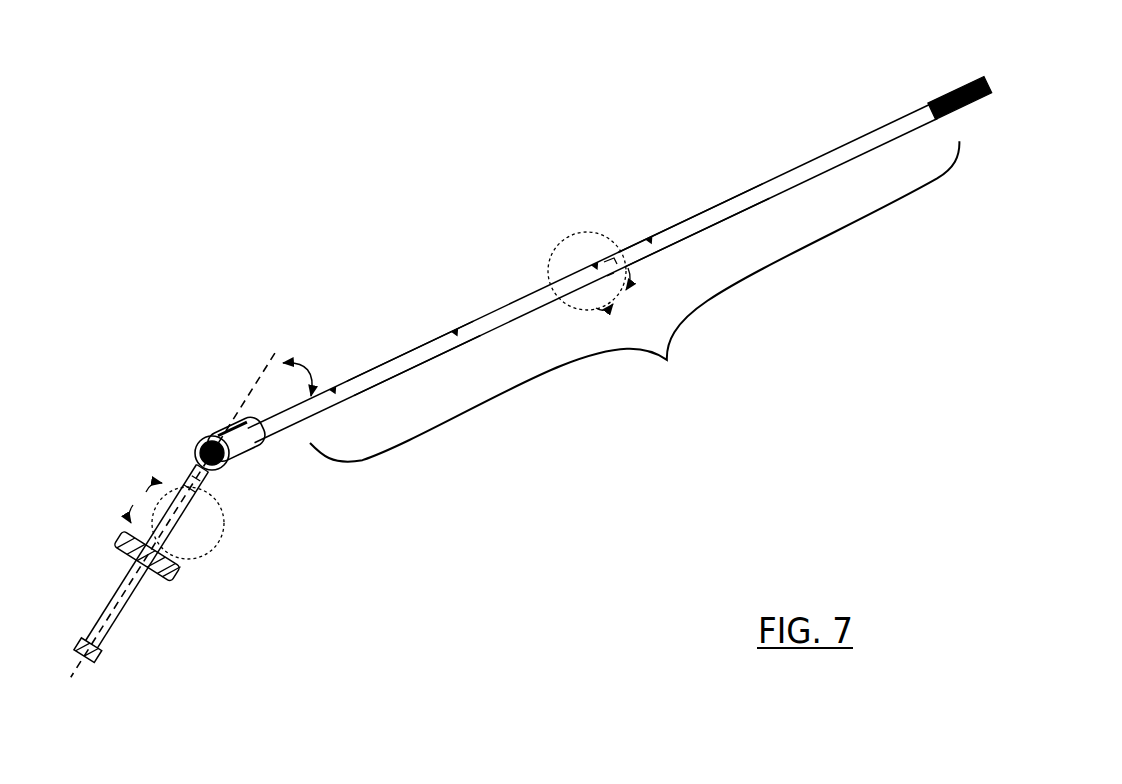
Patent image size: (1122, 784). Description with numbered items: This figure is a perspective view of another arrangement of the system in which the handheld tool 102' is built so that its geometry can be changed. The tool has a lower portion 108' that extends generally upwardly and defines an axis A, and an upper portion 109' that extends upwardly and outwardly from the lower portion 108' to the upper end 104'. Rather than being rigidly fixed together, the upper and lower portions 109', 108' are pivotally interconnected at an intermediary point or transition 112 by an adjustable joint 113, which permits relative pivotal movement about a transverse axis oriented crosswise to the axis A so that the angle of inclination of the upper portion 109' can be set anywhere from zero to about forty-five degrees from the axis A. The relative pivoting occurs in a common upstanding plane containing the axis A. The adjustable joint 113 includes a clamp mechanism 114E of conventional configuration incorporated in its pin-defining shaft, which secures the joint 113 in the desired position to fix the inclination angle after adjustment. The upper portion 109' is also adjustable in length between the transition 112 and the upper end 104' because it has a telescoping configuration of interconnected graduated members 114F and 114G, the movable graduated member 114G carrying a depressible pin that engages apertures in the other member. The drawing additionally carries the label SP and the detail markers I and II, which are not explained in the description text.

The handheld tool 102' is at (600, 271).
The upper end 104' is at (936, 74).
The lower portion 108' is at (190, 575).
The upper portion 109' is at (650, 325).
The transition 112 is at (227, 474).
The adjustable joint 113 is at (240, 460).
The clamp mechanism 114E is at (236, 456).
The graduated member 114F is at (377, 366).
The graduated member 114G is at (653, 239).
The syringe plunger SP is at (125, 621).
The axis A is at (258, 383).
The detail I is at (588, 230).
The detail II is at (194, 566).